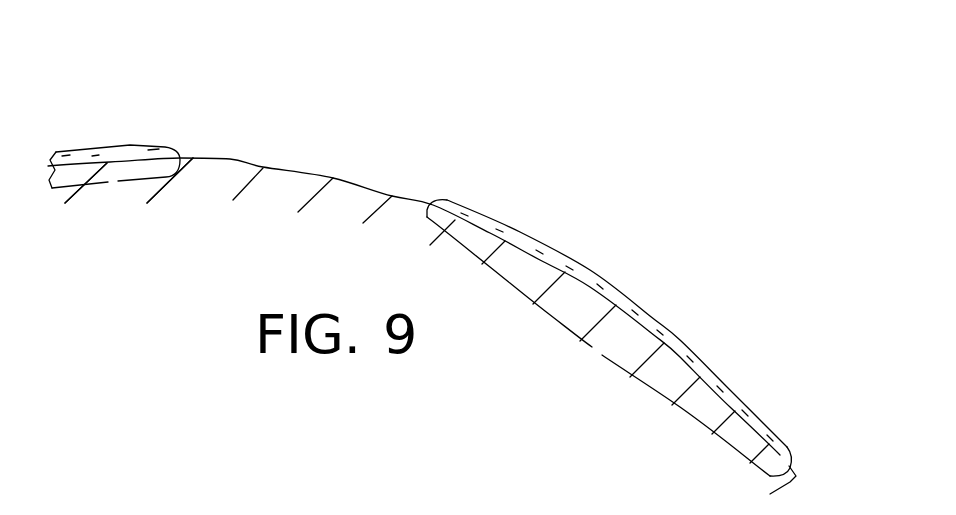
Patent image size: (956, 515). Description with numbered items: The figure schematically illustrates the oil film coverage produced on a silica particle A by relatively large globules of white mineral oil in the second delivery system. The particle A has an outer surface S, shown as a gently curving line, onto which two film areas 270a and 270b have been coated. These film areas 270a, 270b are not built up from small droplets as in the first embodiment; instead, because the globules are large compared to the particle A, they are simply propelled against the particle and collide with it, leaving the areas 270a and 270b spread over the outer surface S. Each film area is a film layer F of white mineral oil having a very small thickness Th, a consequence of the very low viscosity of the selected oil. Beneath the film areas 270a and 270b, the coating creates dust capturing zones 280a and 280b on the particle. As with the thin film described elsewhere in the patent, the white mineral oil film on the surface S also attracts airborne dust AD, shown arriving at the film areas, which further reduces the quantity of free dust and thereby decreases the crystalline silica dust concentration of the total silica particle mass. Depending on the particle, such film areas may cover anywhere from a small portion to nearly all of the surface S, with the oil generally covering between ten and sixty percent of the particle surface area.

The film area 270a is at (128, 147).
The film area 270b is at (673, 328).
The dust capturing zone 280a is at (118, 181).
The dust capturing zone 280b is at (602, 355).
The airborne dust AD is at (80, 127).
The film layer F is at (163, 136).
The particle A is at (242, 139).
The outer surface S is at (310, 165).
The thickness Th is at (558, 310).